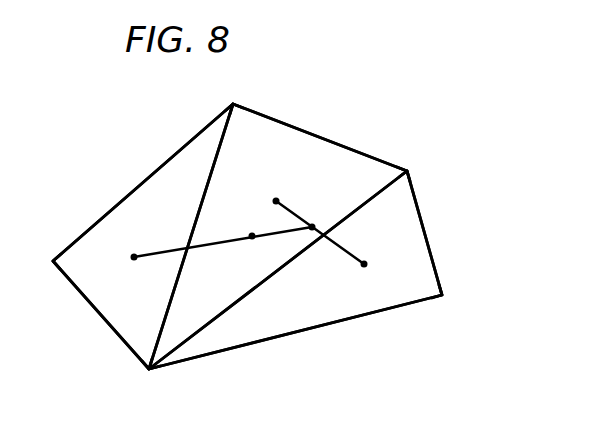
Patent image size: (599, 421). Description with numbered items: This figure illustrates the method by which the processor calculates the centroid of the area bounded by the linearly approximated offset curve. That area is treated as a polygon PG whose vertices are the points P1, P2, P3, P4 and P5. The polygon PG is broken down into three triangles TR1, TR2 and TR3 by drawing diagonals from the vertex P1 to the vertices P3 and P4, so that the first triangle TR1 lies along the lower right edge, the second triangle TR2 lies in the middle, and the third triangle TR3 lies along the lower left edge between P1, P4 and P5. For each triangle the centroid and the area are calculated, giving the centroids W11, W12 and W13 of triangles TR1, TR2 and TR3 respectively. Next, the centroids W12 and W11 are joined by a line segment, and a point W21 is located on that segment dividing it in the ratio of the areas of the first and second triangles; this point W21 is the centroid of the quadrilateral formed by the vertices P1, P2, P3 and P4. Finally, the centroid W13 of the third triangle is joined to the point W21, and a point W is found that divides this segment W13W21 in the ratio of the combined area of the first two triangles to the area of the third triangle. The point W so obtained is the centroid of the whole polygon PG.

The polygon PG is at (378, 145).
The first triangle TR1 is at (320, 318).
The second triangle TR2 is at (197, 325).
The third triangle TR3 is at (128, 318).
The polygon vertex P1 is at (152, 376).
The polygon vertex P2 is at (450, 297).
The polygon vertex P3 is at (417, 174).
The polygon vertex P4 is at (238, 99).
The polygon vertex P5 is at (41, 260).
The centroid of the polygon W is at (223, 235).
The centroid of the first triangle W11 is at (379, 256).
The centroid of the second triangle W12 is at (287, 192).
The centroid of the third triangle W13 is at (140, 246).
The centroid of the quadrilateral W21 is at (320, 232).